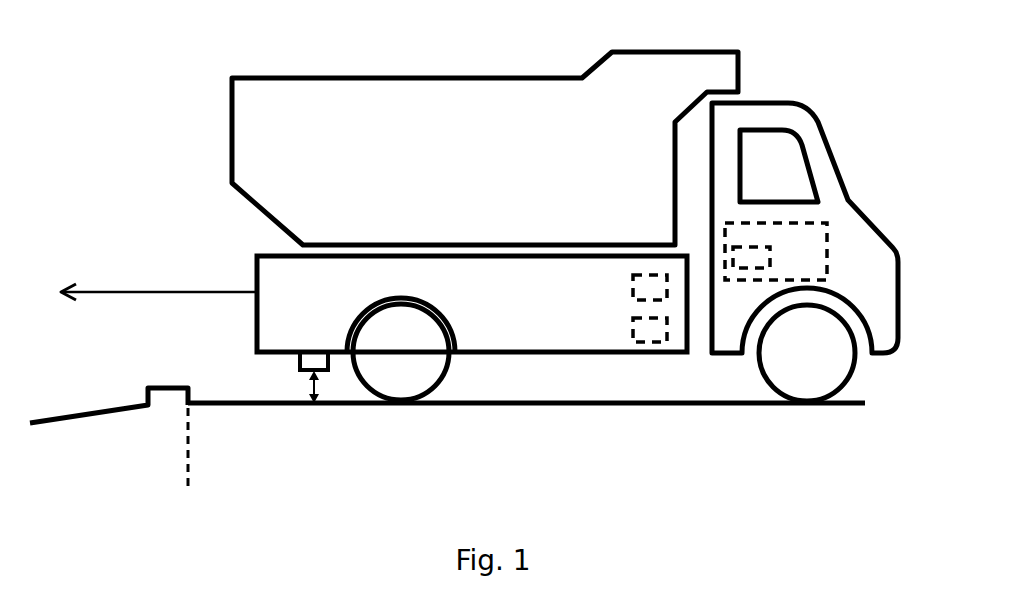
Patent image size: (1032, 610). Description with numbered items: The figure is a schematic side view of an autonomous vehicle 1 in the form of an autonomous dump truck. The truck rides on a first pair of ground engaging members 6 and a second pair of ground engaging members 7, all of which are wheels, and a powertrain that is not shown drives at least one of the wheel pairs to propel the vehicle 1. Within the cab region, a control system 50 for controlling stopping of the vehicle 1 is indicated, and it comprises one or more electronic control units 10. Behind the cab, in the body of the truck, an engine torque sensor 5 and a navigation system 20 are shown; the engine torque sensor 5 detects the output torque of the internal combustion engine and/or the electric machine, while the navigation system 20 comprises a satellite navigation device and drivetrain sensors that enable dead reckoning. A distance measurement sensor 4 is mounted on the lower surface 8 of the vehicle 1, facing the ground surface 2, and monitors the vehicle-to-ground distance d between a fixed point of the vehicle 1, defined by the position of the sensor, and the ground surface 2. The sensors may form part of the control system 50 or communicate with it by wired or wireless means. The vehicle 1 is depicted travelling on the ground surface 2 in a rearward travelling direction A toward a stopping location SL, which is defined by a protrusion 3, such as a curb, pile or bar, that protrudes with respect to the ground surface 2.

The autonomous vehicle 1 is at (775, 103).
The ground surface 2 is at (720, 405).
The protrusion 3 is at (165, 390).
The distance measurement sensor 4 is at (300, 360).
The engine torque sensor 5 is at (633, 333).
The first pair of ground engaging members 6 is at (808, 383).
The second pair of ground engaging members 7 is at (400, 378).
The lower surface 8 is at (540, 355).
The electronic control unit 10 is at (737, 260).
The navigation system 20 is at (633, 290).
The control system 50 is at (808, 232).
The vehicle-to-ground distance d is at (292, 388).
The rearward travelling direction A is at (159, 280).
The stopping location SL is at (193, 465).